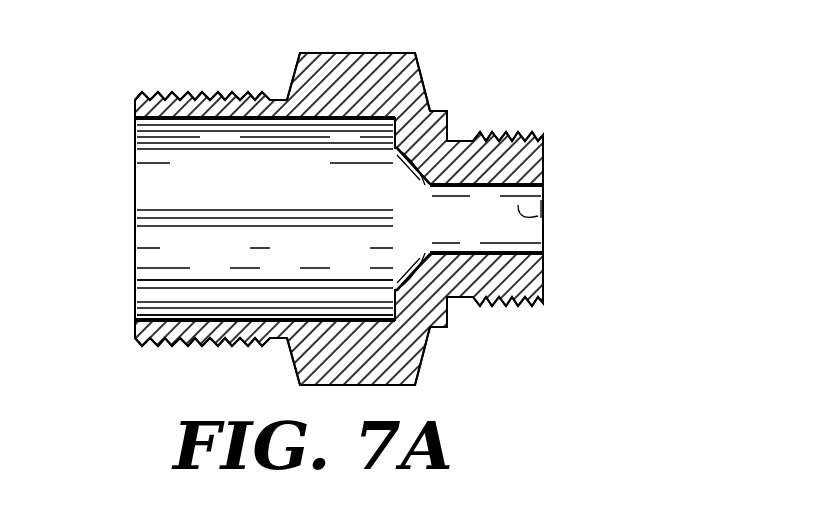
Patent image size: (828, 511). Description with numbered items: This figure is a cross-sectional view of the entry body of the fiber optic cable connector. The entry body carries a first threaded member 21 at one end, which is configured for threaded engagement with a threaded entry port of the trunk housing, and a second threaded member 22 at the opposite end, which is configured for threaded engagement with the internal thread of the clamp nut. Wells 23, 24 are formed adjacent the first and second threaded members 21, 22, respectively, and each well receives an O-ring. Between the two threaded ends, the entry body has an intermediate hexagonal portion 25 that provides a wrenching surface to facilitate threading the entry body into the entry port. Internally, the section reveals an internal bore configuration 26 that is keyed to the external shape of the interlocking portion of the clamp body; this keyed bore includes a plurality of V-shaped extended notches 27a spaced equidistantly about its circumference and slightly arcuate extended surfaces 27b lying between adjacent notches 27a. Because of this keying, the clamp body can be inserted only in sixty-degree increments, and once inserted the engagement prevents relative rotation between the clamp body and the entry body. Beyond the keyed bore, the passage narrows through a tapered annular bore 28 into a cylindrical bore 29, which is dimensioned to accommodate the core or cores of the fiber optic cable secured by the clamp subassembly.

The first threaded member 21 is at (513, 131).
The second threaded member 22 is at (200, 98).
The well 23 is at (471, 139).
The well 24 is at (279, 98).
The intermediate hexagonal portion 25 is at (347, 53).
The internal bore configuration 26 is at (163, 307).
The V-shaped extended notches 27a is at (153, 211).
The arcuate extended surfaces 27b is at (151, 248).
The tapered annular bore 28 is at (408, 160).
The cylindrical bore 29 is at (518, 212).